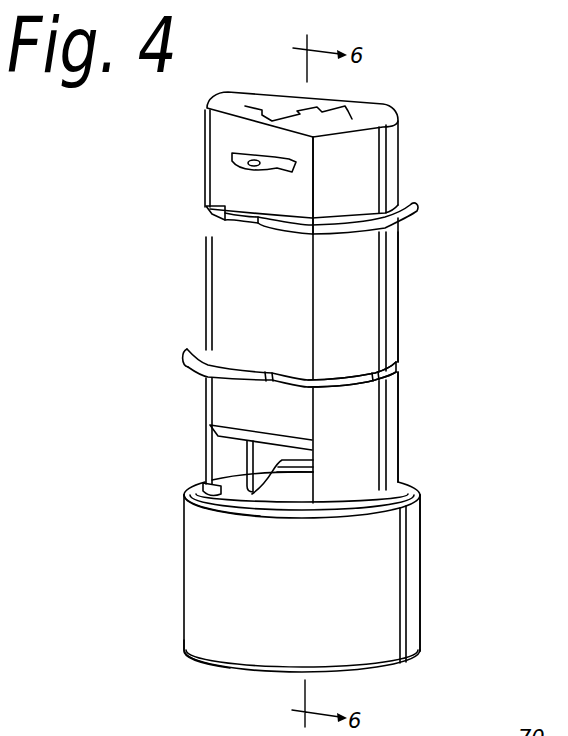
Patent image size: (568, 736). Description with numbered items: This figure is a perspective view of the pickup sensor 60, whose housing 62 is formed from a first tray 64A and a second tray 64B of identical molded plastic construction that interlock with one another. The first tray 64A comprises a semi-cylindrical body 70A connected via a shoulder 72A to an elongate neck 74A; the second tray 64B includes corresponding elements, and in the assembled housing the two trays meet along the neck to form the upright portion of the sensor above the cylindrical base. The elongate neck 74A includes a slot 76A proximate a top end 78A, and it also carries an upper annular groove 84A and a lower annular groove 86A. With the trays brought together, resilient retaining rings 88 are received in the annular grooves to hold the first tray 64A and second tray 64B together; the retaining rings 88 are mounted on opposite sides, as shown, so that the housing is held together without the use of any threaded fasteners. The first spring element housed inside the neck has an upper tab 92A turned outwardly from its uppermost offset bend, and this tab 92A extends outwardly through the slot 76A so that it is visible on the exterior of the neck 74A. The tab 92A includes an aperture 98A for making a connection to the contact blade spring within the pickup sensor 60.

The pickup sensor 60 is at (448, 305).
The housing 62 is at (424, 452).
The first tray 64A is at (179, 646).
The second tray 64B is at (398, 408).
The semi-cylindrical body 70A is at (195, 552).
The shoulder 72A is at (183, 489).
The elongate neck 74A is at (222, 393).
The slot 76A is at (232, 156).
The top end 78A is at (215, 108).
The upper annular groove 84A is at (207, 210).
The lower annular groove 86A is at (398, 364).
The retaining ring 88 is at (416, 207).
The upper tab 92A is at (313, 177).
The aperture 98A is at (255, 159).